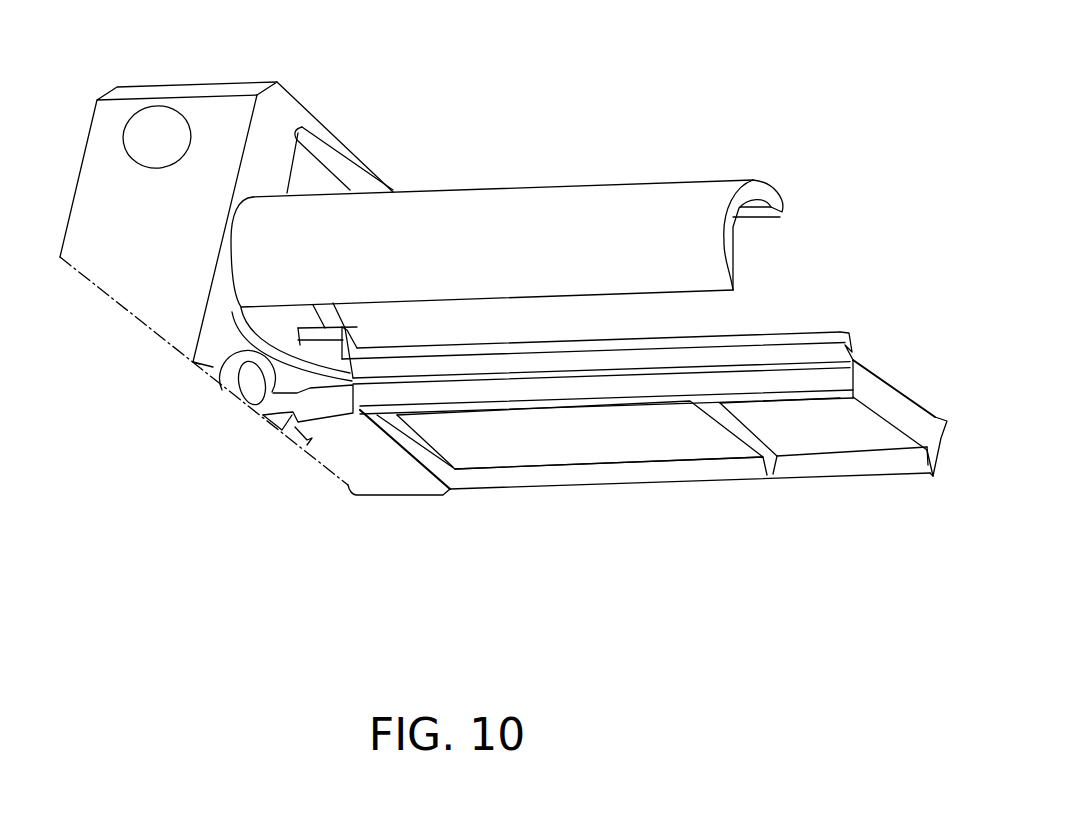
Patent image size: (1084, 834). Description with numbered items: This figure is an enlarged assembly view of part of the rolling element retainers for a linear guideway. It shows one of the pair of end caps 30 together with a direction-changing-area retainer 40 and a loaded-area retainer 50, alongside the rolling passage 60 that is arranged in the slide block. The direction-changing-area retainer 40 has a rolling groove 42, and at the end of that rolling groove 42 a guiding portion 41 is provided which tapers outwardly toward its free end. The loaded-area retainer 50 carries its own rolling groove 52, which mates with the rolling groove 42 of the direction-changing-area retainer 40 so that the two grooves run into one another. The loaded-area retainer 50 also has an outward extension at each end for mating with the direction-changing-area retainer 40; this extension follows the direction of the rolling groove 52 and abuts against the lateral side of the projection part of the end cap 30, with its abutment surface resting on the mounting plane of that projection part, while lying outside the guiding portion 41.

The end cap 30 is at (280, 117).
The direction-changing-area retainer 40 is at (287, 393).
The guiding portion 41 is at (332, 368).
The rolling groove 42 is at (318, 372).
The loaded-area retainer 50 is at (623, 443).
The rolling groove 52 is at (450, 367).
The rolling passage 60 is at (640, 205).